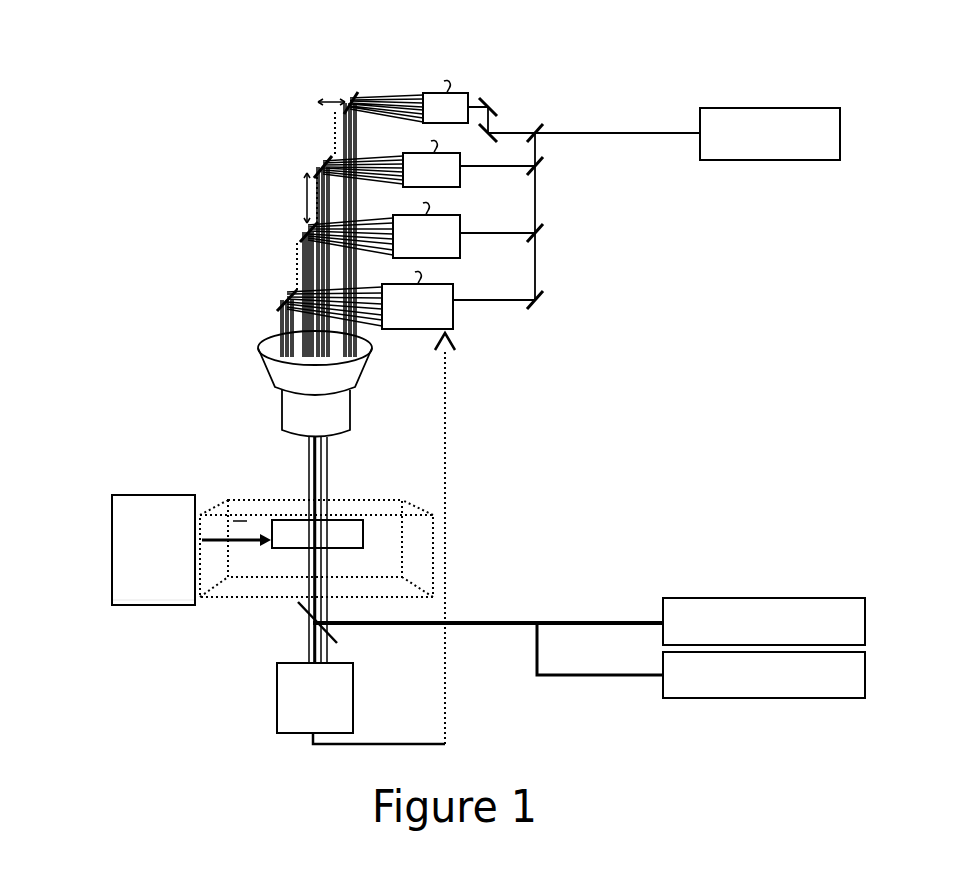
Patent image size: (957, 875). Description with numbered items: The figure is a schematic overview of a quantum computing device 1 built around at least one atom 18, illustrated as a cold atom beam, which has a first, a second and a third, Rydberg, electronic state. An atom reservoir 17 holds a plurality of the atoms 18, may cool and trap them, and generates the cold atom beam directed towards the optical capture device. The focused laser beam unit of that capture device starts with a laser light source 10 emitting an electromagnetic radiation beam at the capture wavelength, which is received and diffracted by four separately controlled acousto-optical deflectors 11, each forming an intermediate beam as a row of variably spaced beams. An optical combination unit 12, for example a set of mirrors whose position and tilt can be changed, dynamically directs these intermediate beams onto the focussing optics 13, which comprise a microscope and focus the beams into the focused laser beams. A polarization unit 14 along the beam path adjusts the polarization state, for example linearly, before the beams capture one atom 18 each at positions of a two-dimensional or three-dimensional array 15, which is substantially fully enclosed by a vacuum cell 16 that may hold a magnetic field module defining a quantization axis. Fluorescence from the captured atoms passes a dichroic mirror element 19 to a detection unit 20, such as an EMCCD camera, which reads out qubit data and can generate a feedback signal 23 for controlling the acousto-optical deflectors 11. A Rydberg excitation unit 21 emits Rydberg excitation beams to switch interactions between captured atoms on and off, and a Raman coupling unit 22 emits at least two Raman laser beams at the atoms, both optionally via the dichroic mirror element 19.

The quantum computing device 1 is at (120, 104).
The laser light source 10 is at (757, 108).
The acousto-optical deflector 11 is at (460, 93).
The optical combination unit 12 is at (320, 167).
The focussing optics 13 is at (265, 370).
The polarization unit 14 is at (273, 518).
The two-dimensional or three-dimensional array 15 is at (433, 585).
The vacuum cell 16 is at (433, 530).
The atom reservoir 17 is at (112, 495).
The atom 18 is at (163, 605).
The dichroic mirror element 19 is at (313, 623).
The detection unit 20 is at (277, 678).
The Rydberg excitation unit 21 is at (780, 698).
The Raman coupling unit 22 is at (723, 597).
The feedback signal 23 is at (445, 453).